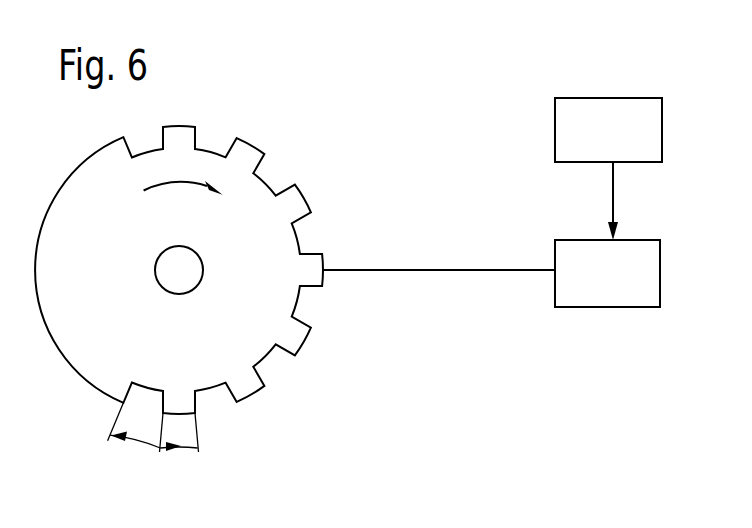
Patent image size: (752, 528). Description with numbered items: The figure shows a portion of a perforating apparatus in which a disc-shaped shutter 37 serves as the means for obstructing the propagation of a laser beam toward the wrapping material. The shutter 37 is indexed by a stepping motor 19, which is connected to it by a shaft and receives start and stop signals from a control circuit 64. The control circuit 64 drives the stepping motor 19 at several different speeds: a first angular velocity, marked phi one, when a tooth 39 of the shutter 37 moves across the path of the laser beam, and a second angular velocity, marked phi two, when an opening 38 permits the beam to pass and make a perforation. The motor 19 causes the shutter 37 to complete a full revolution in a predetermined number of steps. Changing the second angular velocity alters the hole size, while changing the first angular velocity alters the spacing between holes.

The disc-shaped shutter 37 is at (85, 363).
The opening 38 is at (215, 403).
The tooth 39 is at (261, 387).
The control circuit 64 is at (603, 110).
The stepping motor 19 is at (608, 307).